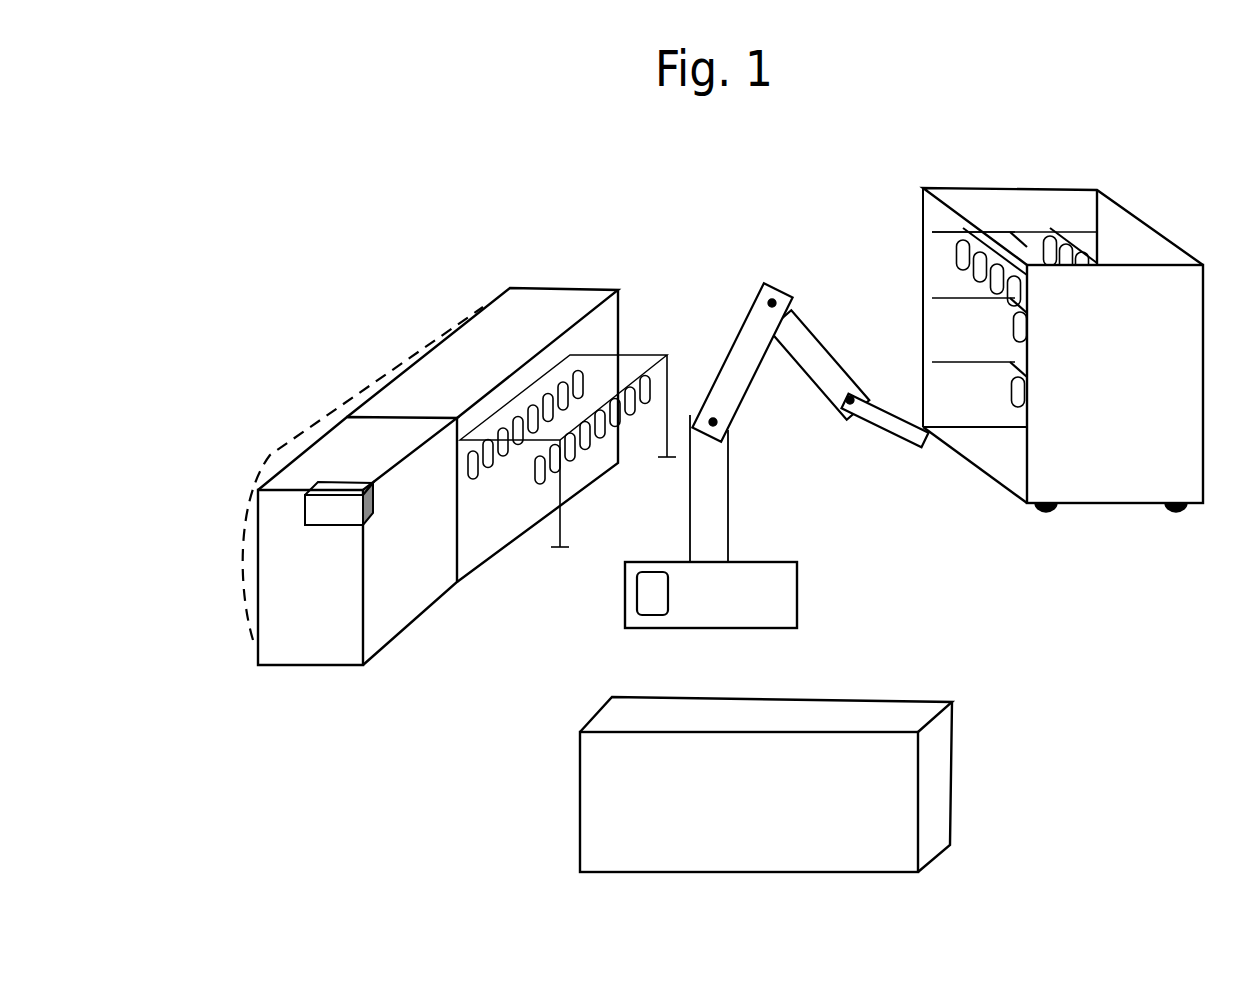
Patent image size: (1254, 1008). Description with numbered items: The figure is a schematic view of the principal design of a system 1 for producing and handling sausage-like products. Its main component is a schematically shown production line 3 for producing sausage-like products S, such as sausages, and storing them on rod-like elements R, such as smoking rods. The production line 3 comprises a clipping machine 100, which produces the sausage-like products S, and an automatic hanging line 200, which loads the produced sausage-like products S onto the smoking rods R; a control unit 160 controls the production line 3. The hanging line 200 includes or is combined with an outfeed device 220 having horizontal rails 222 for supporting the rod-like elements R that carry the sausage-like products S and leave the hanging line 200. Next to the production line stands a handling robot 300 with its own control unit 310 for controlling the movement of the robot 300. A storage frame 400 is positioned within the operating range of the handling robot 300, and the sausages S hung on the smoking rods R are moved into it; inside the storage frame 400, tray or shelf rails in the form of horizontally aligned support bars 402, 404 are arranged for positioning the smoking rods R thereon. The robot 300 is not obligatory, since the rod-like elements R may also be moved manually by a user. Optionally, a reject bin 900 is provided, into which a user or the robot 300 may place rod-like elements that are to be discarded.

The system for producing and handling sausage-like products 1 is at (286, 212).
The production line 3 is at (370, 363).
The clipping machine 100 is at (373, 447).
The control unit 160 is at (308, 480).
The automatic hanging line 200 is at (505, 317).
The outfeed device 220 is at (508, 508).
The horizontal rails 222 is at (637, 355).
The rod-like elements R is at (570, 357).
The sausage-like products S is at (640, 397).
The handling robot 300 is at (777, 455).
The control unit 310 is at (645, 599).
The storage frame 400 is at (1063, 350).
The support bars 402 is at (943, 232).
The support bars 404 is at (1013, 440).
The reject bin 900 is at (766, 784).